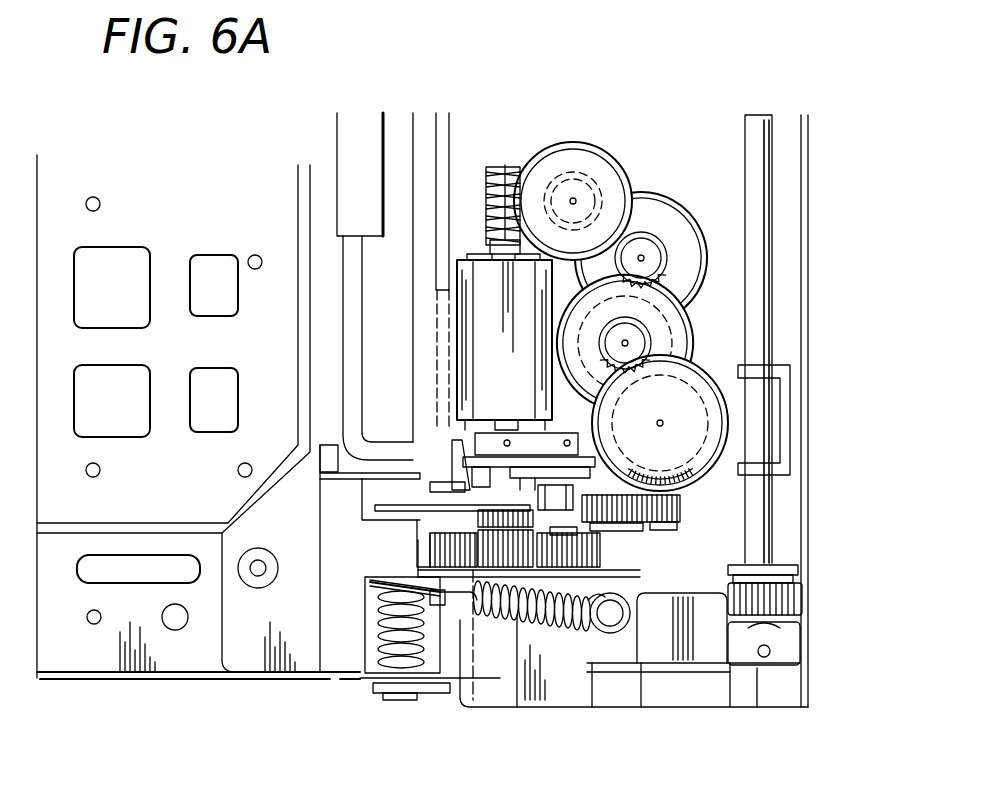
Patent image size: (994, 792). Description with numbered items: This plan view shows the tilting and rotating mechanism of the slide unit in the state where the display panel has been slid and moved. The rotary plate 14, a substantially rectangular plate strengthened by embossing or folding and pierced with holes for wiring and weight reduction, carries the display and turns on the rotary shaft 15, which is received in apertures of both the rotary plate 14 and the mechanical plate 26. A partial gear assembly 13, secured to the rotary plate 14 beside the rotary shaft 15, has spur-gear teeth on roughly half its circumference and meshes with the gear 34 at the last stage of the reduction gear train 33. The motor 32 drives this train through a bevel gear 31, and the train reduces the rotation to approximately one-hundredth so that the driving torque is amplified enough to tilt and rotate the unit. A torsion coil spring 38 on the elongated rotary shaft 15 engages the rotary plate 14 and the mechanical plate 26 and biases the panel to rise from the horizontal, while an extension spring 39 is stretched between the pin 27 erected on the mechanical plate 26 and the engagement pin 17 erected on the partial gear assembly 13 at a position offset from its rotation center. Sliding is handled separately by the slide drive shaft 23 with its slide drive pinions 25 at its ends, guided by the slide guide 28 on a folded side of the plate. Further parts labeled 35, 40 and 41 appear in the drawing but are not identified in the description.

The partial gear assembly 13 is at (347, 653).
The rotary plate 14 is at (102, 655).
The rotary shaft 15 is at (397, 697).
The engagement pin 17 is at (368, 590).
The slide drive shaft 23 is at (765, 268).
The slide drive pinion 25 is at (790, 600).
The mechanical plate 26 is at (810, 314).
The pin 27 is at (610, 612).
The slide guide 28 is at (707, 695).
The bevel gear 31 is at (690, 487).
The motor 32 is at (483, 258).
The reduction gear train 33 is at (625, 560).
The gear 34 is at (467, 708).
The worm gear 35 is at (505, 165).
The torsion coil spring 38 is at (360, 690).
The extension spring 39 is at (525, 622).
The clamp bracket 40 is at (497, 470).
The mounting plate 41 is at (593, 468).